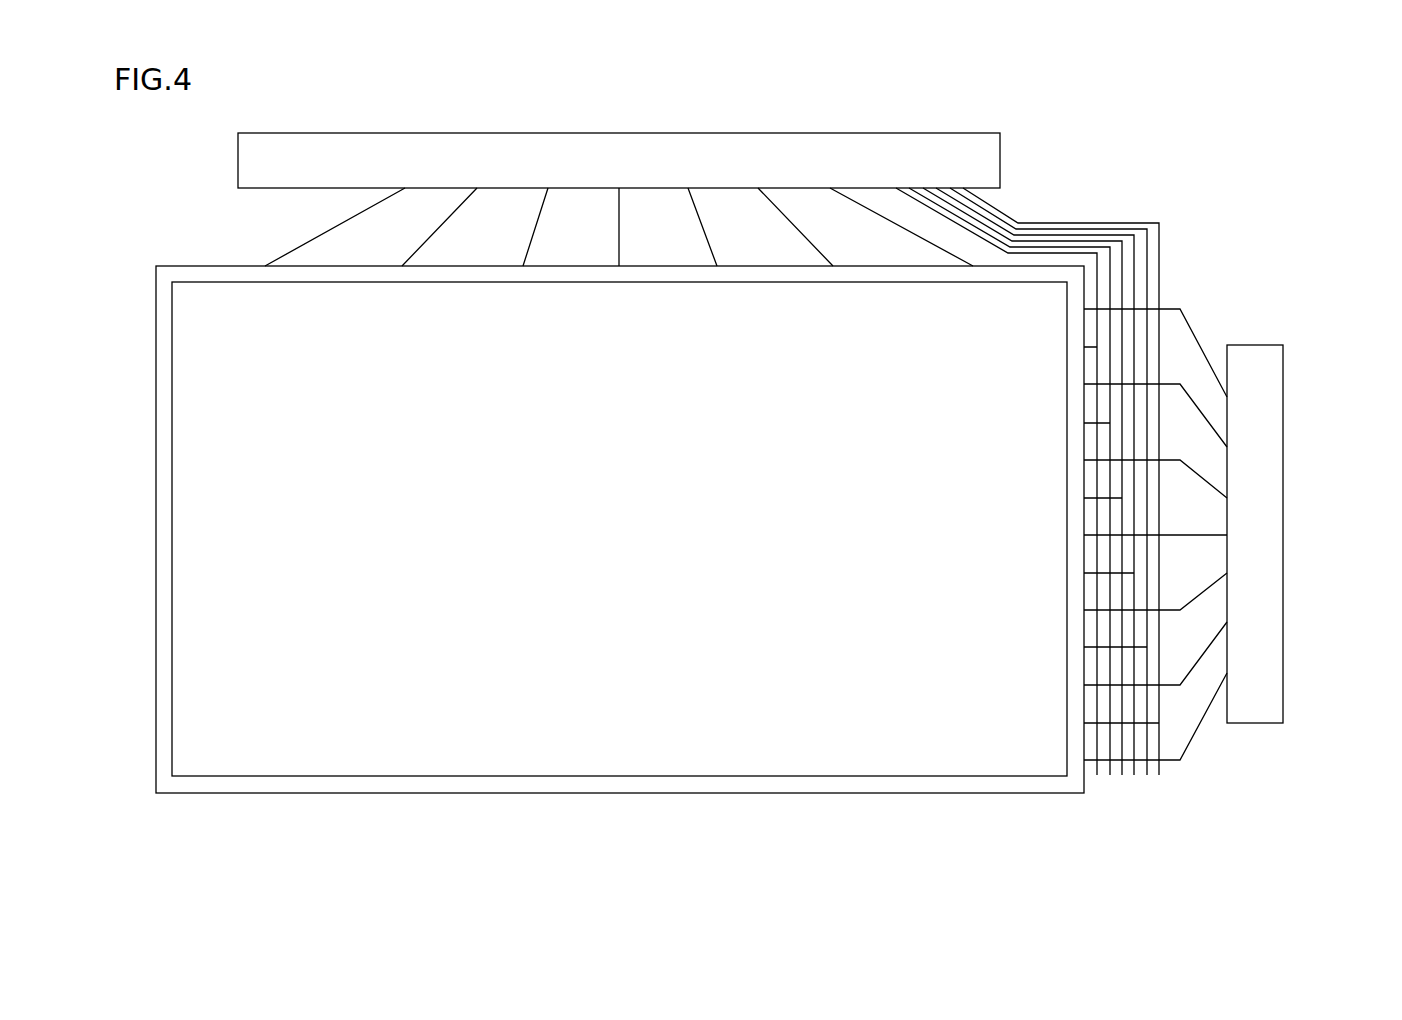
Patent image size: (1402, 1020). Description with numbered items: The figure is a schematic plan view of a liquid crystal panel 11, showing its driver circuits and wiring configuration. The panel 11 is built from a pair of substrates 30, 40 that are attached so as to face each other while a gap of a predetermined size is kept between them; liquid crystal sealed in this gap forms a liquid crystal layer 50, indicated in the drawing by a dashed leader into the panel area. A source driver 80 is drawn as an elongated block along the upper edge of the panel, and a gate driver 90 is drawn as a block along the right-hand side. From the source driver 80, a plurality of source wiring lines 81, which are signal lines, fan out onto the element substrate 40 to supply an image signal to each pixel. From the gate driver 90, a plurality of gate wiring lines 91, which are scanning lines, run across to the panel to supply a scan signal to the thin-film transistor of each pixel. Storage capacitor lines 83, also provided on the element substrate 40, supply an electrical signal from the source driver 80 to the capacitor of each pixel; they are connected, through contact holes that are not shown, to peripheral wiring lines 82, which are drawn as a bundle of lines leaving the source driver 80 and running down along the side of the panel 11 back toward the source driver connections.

The liquid crystal panel 11 is at (1142, 127).
The substrate 30 is at (435, 735).
The element substrate 40 is at (332, 782).
The liquid crystal layer 50 is at (673, 645).
The source driver 80 is at (308, 147).
The source wiring lines 81 is at (318, 233).
The peripheral wiring lines 82 is at (1000, 207).
The storage capacitor lines 83 is at (1103, 684).
The gate driver 90 is at (1270, 380).
The gate wiring lines 91 is at (1172, 305).